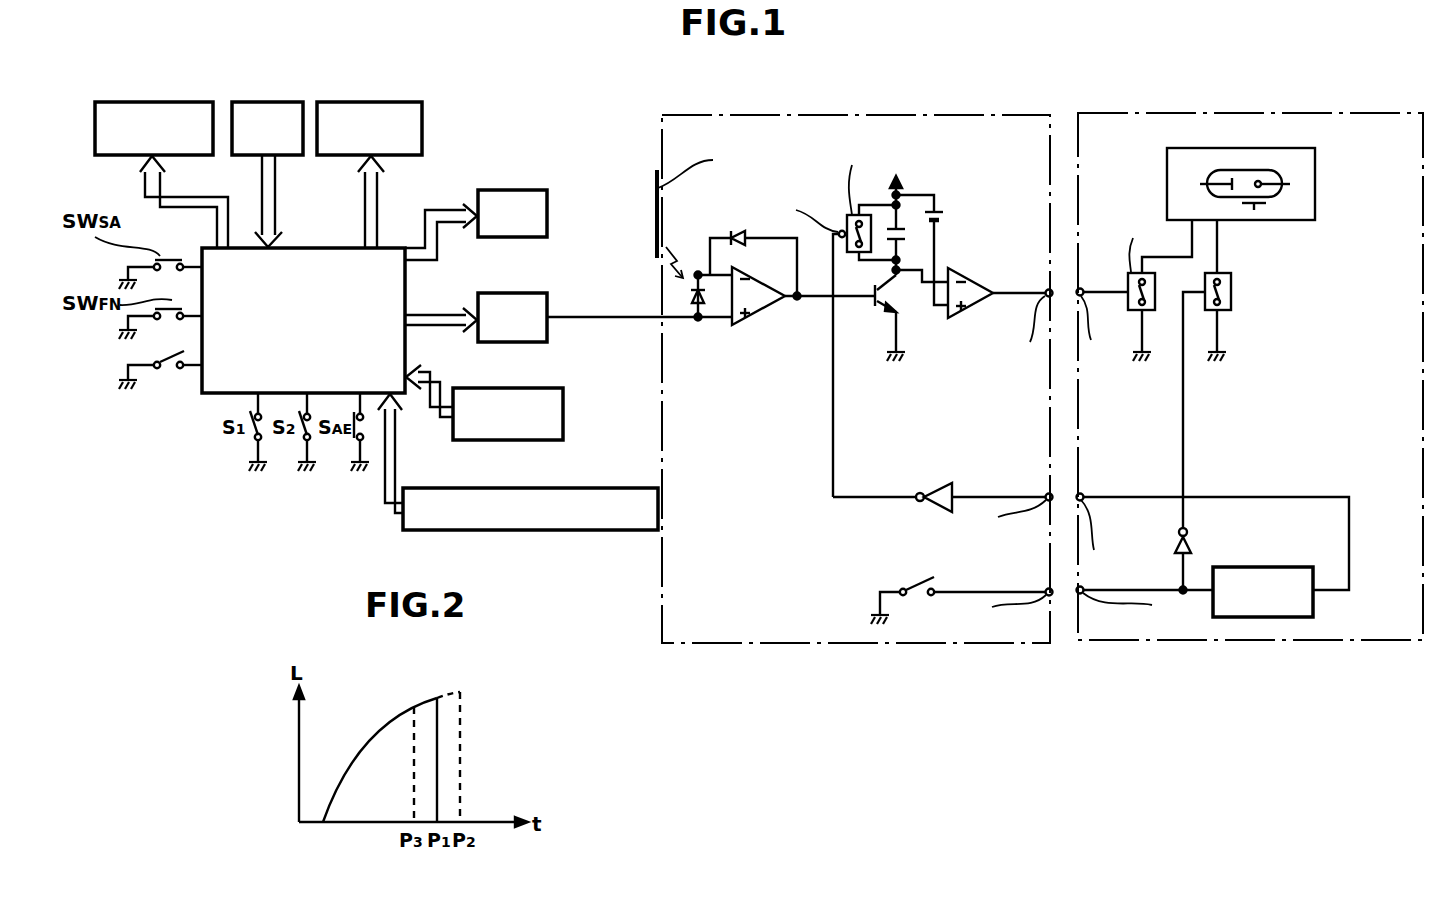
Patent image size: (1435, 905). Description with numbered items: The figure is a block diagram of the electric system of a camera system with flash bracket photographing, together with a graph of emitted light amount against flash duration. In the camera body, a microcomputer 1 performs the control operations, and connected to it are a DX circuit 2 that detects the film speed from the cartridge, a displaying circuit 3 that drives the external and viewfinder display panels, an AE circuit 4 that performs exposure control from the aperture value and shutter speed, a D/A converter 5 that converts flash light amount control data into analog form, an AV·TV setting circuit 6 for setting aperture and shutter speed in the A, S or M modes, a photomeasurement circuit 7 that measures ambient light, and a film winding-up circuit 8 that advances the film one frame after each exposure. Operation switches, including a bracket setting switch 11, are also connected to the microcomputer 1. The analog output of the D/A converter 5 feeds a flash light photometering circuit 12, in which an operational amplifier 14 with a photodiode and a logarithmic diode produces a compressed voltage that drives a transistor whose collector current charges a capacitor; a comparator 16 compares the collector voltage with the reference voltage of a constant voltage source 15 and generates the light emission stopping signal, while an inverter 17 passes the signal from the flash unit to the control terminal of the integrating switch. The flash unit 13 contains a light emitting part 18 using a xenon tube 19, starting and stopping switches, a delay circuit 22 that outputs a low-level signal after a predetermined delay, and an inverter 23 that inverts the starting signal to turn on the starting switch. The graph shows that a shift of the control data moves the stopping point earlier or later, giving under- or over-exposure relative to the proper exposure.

The microcomputer 1 is at (312, 248).
The DX circuit 2 is at (257, 100).
The displaying circuit 3 is at (355, 100).
The AE circuit 4 is at (508, 190).
The D/A converter 5 is at (535, 293).
The AV·TV setting circuit 6 is at (554, 388).
The photomeasurement circuit 7 is at (597, 488).
The film winding-up circuit 8 is at (152, 100).
The bracket setting switch 11 is at (172, 352).
The flash light photometering circuit 12 is at (908, 115).
The flash unit 13 is at (1190, 112).
The operational amplifier 14 is at (752, 319).
The constant voltage source 15 is at (945, 215).
The comparator 16 is at (975, 312).
The inverter 17 is at (940, 483).
The light emitting part 18 is at (1276, 169).
The xenon tube 19 is at (1265, 171).
The delay circuit 22 is at (1315, 612).
The inverter 23 is at (1197, 541).